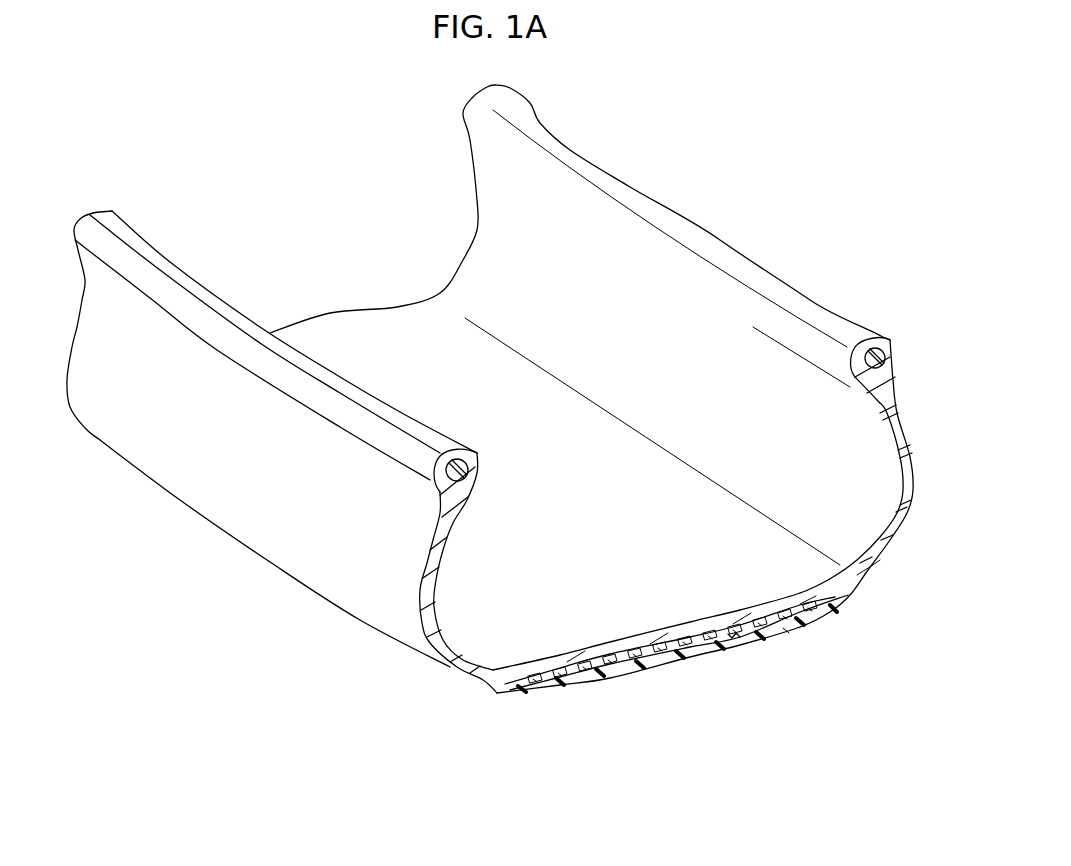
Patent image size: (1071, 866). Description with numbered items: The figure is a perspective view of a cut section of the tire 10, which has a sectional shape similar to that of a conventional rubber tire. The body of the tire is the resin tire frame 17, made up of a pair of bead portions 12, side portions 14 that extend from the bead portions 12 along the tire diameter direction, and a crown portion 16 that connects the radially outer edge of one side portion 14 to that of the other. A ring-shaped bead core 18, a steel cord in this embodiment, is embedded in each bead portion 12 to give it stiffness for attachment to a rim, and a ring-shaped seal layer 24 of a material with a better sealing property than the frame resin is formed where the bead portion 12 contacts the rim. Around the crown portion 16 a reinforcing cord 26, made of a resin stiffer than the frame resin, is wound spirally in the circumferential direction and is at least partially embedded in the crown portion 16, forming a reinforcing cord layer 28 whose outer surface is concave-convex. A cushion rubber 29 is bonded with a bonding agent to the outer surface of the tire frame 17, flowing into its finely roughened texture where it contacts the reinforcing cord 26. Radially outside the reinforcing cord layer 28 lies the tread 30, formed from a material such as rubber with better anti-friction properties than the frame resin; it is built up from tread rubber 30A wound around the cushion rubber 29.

The tire 10 is at (338, 658).
The bead portion 12 is at (433, 430).
The side portion 14 is at (422, 582).
The crown portion 16 is at (670, 655).
The tire frame 17 is at (880, 568).
The bead core 18 is at (470, 459).
The seal layer 24 is at (353, 397).
The reinforcing cord 26 is at (540, 668).
The reinforcing cord layer 28 is at (503, 693).
The cushion rubber 29 is at (575, 682).
The tread 30 is at (750, 648).
The tread rubber 30A is at (788, 627).